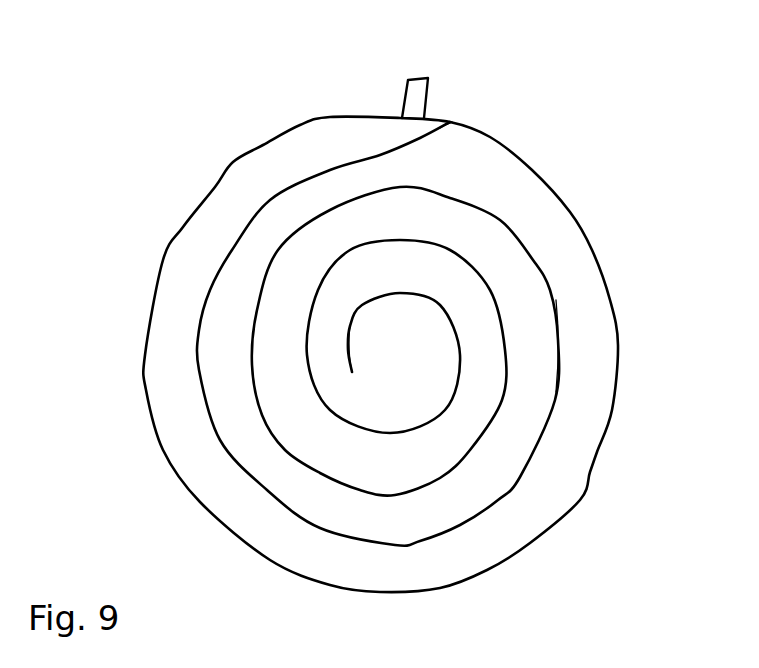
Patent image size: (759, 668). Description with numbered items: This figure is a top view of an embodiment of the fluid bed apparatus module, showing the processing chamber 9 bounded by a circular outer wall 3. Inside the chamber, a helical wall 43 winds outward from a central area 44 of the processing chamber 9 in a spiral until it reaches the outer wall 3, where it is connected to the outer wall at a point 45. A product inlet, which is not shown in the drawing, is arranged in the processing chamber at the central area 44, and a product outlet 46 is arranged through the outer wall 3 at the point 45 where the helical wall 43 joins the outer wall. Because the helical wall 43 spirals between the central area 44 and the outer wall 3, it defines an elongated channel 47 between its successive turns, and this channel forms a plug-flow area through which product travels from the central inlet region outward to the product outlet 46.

The processing chamber 9 is at (417, 296).
The outer wall 3 is at (618, 322).
The helical wall 43 is at (559, 378).
The central area 44 is at (428, 374).
The point 45 is at (448, 127).
The product outlet 46 is at (418, 95).
The elongated channel 47 is at (435, 231).